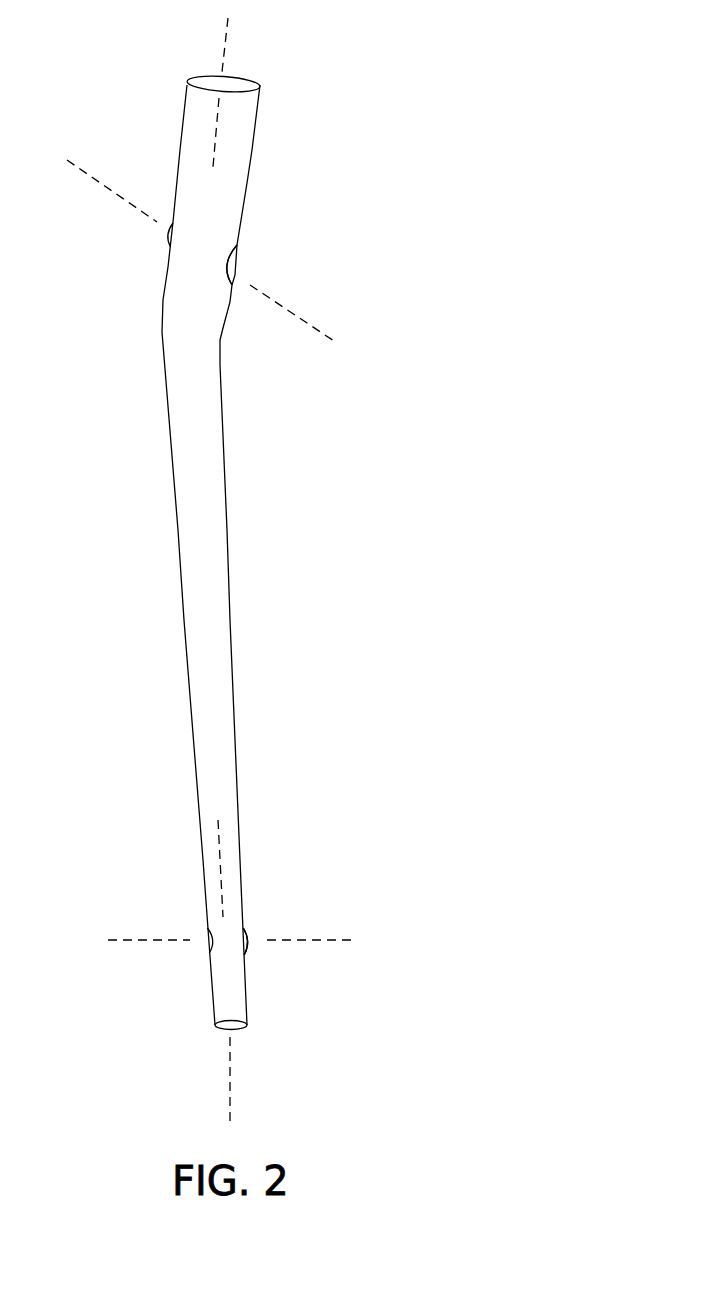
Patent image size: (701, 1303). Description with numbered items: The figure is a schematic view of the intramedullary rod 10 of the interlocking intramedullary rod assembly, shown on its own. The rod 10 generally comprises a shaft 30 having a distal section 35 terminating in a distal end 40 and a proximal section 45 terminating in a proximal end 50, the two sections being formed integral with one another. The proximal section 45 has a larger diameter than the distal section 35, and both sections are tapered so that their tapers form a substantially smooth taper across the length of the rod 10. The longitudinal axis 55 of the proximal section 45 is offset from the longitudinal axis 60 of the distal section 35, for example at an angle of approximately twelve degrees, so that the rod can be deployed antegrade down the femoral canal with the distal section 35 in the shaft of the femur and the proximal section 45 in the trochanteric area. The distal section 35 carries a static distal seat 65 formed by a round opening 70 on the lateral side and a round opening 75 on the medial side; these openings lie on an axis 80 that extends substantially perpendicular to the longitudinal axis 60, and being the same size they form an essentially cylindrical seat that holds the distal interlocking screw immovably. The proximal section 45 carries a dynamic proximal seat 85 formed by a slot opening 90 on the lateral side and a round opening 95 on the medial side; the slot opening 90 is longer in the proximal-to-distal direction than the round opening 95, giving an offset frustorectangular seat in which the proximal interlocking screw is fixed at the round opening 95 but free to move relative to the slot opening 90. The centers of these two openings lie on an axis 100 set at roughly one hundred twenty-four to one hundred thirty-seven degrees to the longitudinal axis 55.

The intramedullary rod 10 is at (390, 350).
The shaft 30 is at (253, 450).
The distal section 35 is at (218, 690).
The distal end 40 is at (243, 1033).
The proximal section 45 is at (229, 183).
The proximal end 50 is at (249, 76).
The longitudinal axis of proximal section 55 is at (223, 33).
The longitudinal axis of distal section 60 is at (233, 1090).
The static distal seat 65 is at (246, 926).
The round opening 70 is at (248, 953).
The round opening 75 is at (205, 952).
The axis 80 is at (345, 943).
The dynamic proximal seat 85 is at (240, 284).
The slot opening 90 is at (238, 263).
The round opening 95 is at (166, 238).
The axis 100 is at (88, 177).